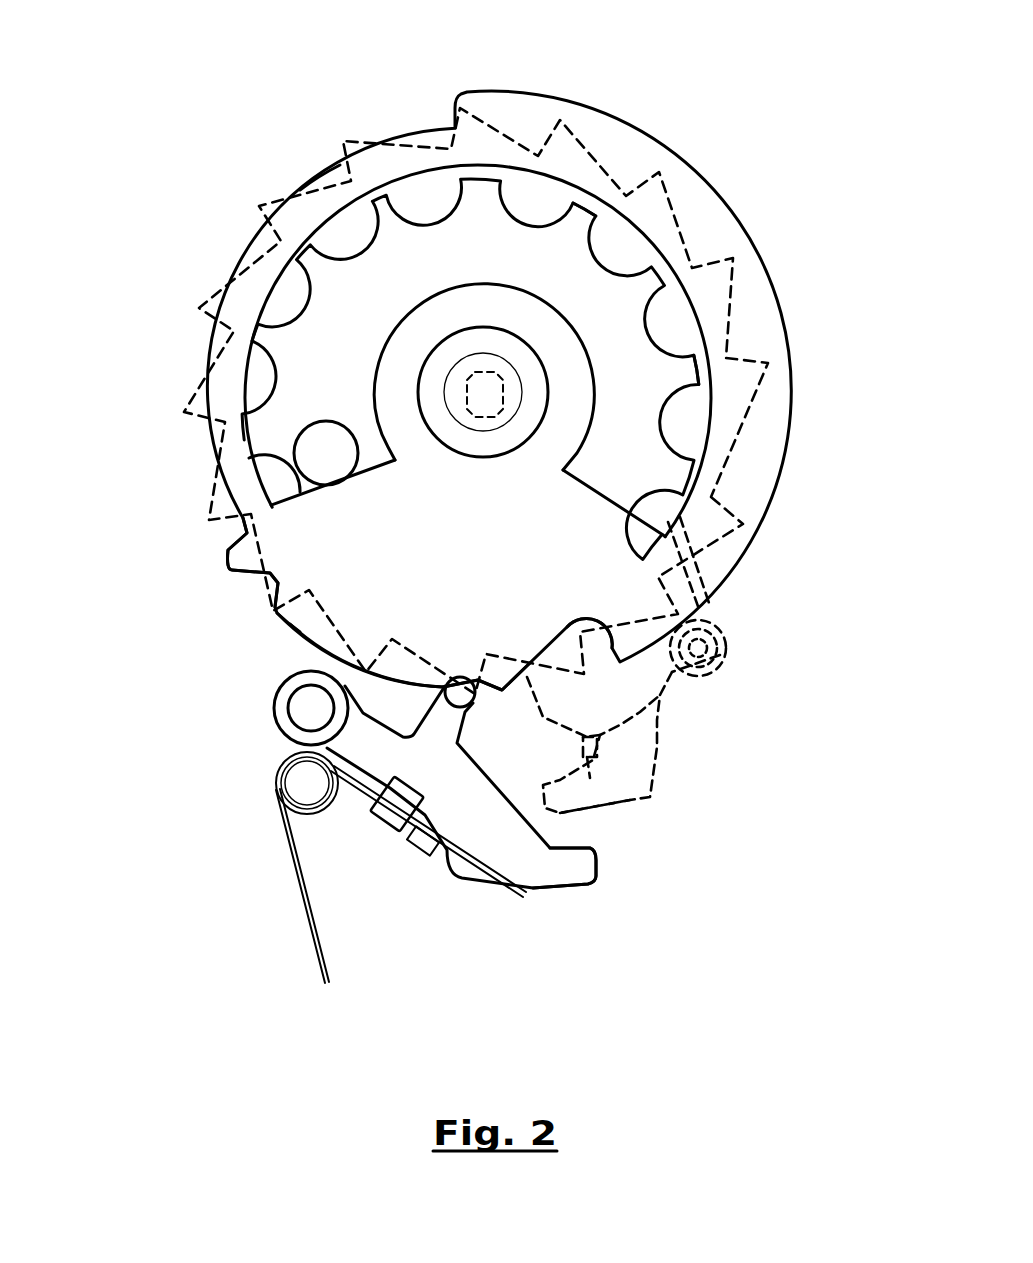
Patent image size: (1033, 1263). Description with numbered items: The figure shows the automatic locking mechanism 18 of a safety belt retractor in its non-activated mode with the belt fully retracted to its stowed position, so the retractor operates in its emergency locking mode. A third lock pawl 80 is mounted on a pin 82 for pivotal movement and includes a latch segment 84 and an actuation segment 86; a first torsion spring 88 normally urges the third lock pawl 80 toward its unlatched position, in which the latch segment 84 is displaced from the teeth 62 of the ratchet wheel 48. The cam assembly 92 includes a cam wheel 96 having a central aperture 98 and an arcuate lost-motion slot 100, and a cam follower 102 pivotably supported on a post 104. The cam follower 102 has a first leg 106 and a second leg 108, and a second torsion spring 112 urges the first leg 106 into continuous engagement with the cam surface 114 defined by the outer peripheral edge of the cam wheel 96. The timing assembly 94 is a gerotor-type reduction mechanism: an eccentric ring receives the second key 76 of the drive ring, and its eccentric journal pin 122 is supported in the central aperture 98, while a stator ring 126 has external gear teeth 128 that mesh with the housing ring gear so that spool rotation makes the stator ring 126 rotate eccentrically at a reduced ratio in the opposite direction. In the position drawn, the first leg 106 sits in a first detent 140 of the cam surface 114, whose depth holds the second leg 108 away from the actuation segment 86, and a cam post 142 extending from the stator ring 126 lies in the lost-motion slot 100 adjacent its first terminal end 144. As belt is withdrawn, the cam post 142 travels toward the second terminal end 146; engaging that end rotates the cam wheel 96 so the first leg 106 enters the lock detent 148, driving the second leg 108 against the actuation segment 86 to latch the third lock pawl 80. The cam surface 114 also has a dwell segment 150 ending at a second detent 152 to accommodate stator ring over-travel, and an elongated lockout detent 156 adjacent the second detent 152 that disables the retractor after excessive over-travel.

The automatic locking mechanism 18 is at (585, 86).
The ratchet wheel 48 is at (447, 401).
The teeth 62 is at (190, 430).
The second key 76 is at (520, 390).
The third lock pawl 80 is at (655, 753).
The pin 82 is at (730, 648).
The latch segment 84 is at (566, 755).
The actuation segment 86 is at (665, 808).
The first torsion spring 88 is at (700, 682).
The cam assembly 92 is at (275, 738).
The timing assembly 94 is at (450, 207).
The cam wheel 96 is at (757, 298).
The central aperture 98 is at (436, 358).
The lost-motion slot 100 is at (697, 405).
The cam follower 102 is at (546, 870).
The post 104 is at (310, 706).
The first leg 106 is at (464, 676).
The second leg 108 is at (597, 860).
The second torsion spring 112 is at (320, 930).
The cam surface 114 is at (281, 619).
The eccentric journal pin 122 is at (513, 348).
The stator ring 126 is at (496, 272).
The external gear teeth 128 is at (582, 212).
The first detent 140 is at (480, 690).
The cam post 142 is at (325, 452).
The first terminal end 144 is at (384, 464).
The second terminal end 146 is at (590, 470).
The lock detent 148 is at (548, 640).
The dwell segment 150 is at (293, 637).
The second detent 152 is at (240, 577).
The lockout detent 156 is at (313, 177).